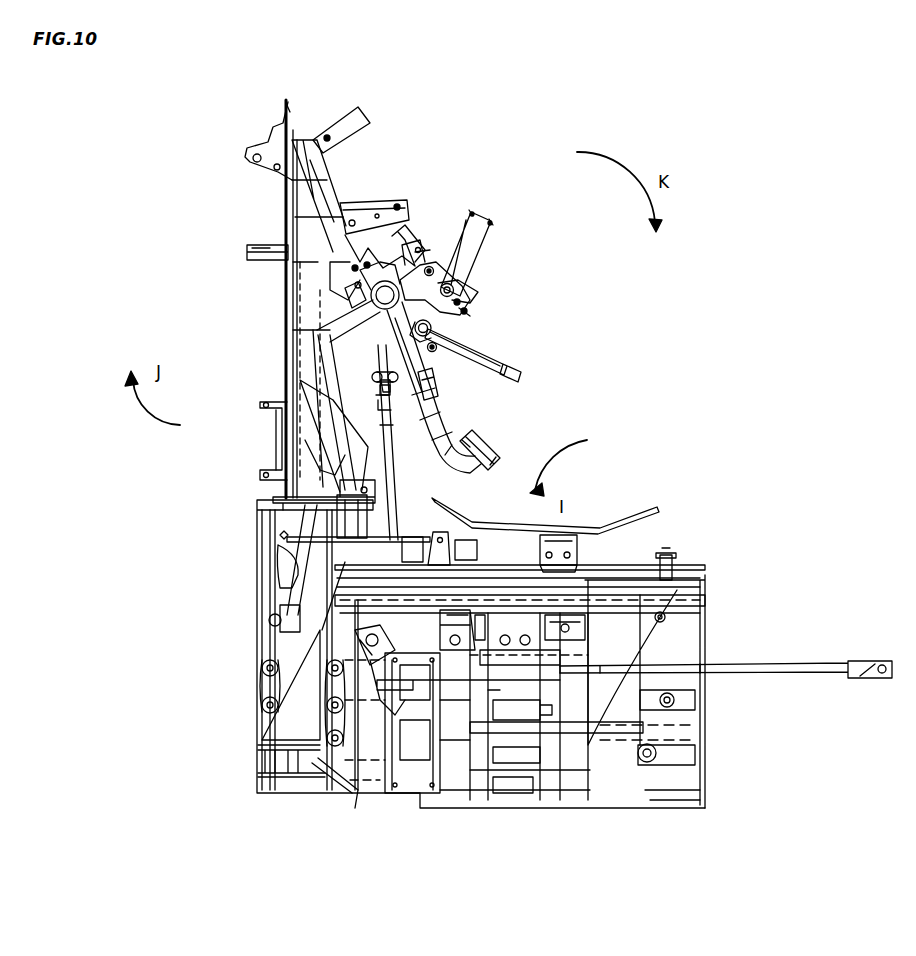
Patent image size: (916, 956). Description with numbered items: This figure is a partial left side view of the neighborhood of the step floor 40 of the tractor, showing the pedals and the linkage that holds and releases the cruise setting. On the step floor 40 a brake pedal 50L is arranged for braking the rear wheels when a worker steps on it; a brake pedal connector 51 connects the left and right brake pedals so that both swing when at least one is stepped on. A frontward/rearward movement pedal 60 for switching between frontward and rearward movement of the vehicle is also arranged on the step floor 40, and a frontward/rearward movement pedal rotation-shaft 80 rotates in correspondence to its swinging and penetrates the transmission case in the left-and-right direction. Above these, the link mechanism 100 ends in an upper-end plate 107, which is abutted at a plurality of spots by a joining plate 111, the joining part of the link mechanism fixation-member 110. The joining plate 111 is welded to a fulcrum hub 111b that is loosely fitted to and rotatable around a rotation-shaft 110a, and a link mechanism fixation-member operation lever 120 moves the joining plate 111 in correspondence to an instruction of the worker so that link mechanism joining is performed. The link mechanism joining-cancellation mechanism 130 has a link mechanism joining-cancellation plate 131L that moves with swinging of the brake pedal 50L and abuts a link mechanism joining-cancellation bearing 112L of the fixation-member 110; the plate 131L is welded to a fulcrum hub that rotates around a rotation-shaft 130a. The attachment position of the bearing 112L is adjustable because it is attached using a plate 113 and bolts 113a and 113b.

The link mechanism fixation-member 110 is at (433, 278).
The joining plate 111 is at (325, 255).
The link mechanism joining-cancellation plate 131L is at (429, 264).
The link mechanism joining-cancellation bearing 112L is at (475, 247).
The plate 113 is at (462, 288).
The bolt 113a is at (460, 301).
The bolt 113b is at (466, 313).
The rotation-shaft 110a is at (431, 330).
The fulcrum hub 111b is at (434, 351).
The link mechanism fixation-member operation lever 120 is at (520, 376).
The rotation-shaft 130a is at (352, 292).
The link mechanism joining-cancellation mechanism 130 is at (295, 367).
The upper-end plate 107 is at (295, 420).
The brake pedal connector 51 is at (440, 396).
The brake pedal 50L is at (487, 441).
The link mechanism 100 is at (405, 468).
The frontward/rearward movement pedal 60 is at (640, 510).
The step floor 40 is at (693, 573).
The frontward/rearward movement pedal rotation-shaft 80 is at (548, 618).